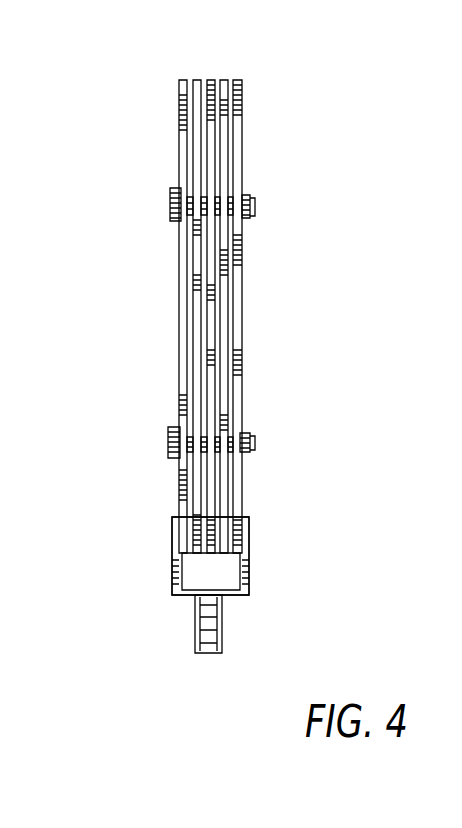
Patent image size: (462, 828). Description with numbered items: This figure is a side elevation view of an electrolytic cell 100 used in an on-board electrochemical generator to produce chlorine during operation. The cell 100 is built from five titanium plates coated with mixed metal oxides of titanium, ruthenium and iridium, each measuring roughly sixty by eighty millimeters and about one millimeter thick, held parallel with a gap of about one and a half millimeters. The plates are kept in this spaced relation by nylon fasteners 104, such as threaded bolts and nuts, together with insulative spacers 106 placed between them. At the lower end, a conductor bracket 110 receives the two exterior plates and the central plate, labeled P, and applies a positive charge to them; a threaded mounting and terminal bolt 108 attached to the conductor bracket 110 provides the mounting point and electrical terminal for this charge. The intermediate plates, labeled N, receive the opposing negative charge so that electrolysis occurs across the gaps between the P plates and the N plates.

The electrolytic cell 100 is at (134, 86).
The positively charged plates P is at (183, 79).
The negatively charged intermediate plates N is at (226, 79).
The nylon fasteners 104 is at (243, 192).
The insulative spacers 106 is at (190, 193).
The threaded mounting and terminal bolt 108 is at (200, 612).
The conductor bracket 110 is at (248, 548).